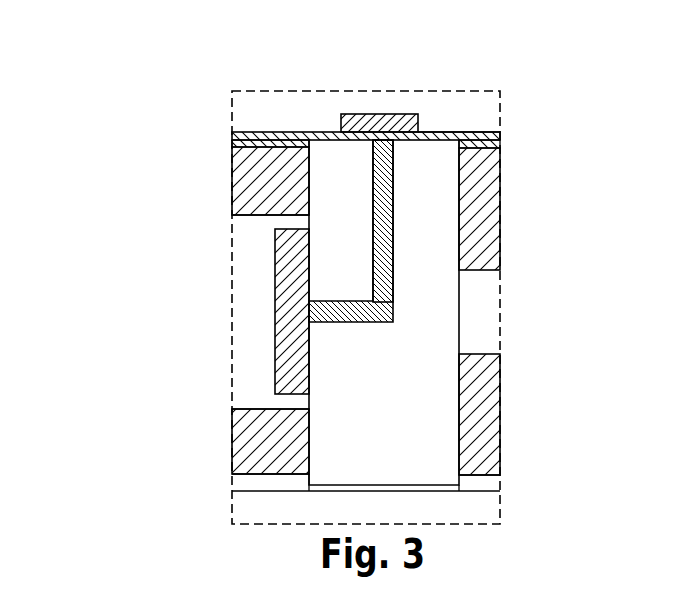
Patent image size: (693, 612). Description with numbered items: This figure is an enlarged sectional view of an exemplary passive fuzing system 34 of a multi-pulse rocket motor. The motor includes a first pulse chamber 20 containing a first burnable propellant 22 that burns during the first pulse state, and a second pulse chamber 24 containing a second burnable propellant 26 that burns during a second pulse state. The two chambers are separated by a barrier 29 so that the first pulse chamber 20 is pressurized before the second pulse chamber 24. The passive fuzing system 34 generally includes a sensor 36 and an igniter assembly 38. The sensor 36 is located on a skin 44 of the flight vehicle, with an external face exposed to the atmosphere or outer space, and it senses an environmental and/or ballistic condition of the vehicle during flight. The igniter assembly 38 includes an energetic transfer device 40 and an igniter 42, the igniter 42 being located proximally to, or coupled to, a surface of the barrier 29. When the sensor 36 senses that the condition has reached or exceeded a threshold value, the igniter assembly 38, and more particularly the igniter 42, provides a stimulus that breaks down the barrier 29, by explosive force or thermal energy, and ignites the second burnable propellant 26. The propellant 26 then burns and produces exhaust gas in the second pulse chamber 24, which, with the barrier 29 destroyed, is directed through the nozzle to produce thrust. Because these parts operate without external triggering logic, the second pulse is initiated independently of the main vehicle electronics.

The first pulse chamber 20 is at (475, 310).
The first burnable propellant 22 is at (487, 207).
The second pulse chamber 24 is at (250, 251).
The second burnable propellant 26 is at (250, 178).
The barrier 29 is at (440, 405).
The passive fuzing system 34 is at (425, 121).
The sensor 36 is at (380, 116).
The igniter assembly 38 is at (333, 331).
The energetic transfer device 40 is at (385, 232).
The igniter 42 is at (285, 303).
The skin 44 is at (484, 139).